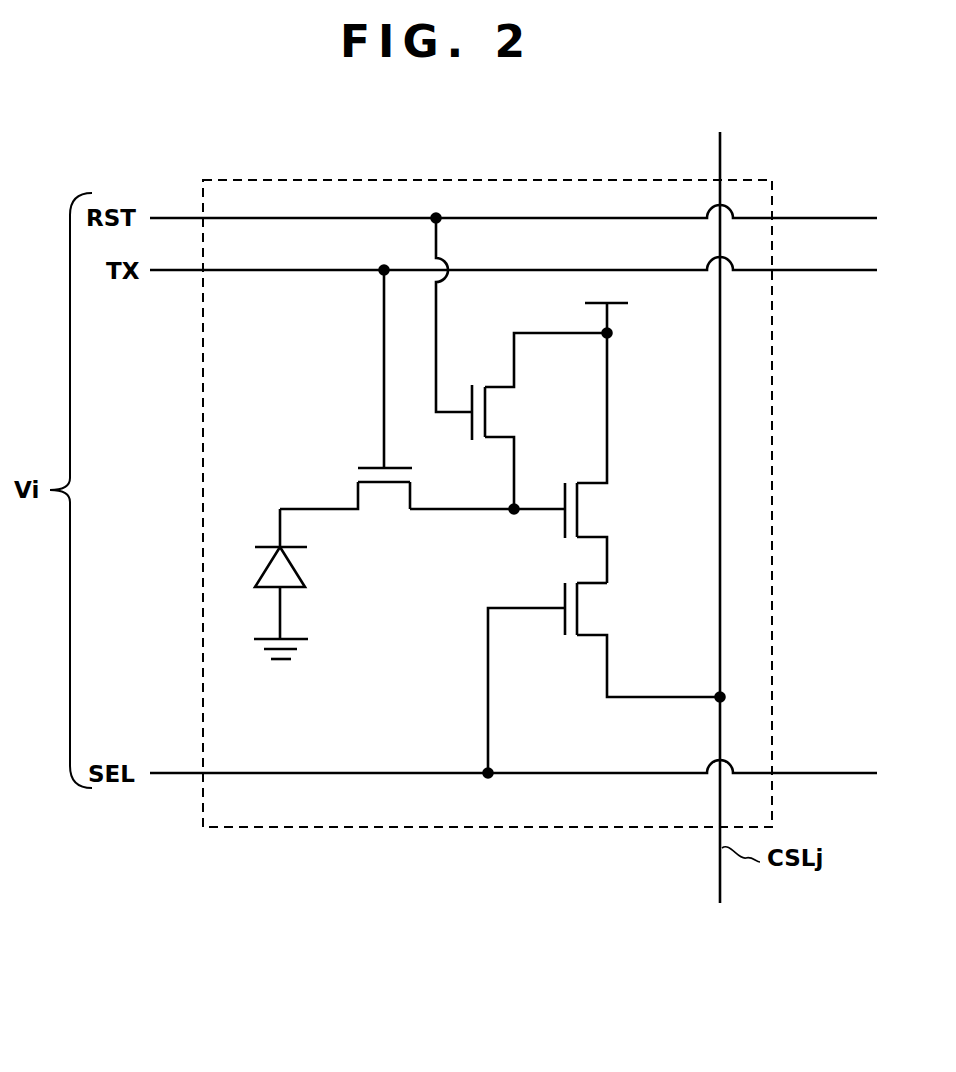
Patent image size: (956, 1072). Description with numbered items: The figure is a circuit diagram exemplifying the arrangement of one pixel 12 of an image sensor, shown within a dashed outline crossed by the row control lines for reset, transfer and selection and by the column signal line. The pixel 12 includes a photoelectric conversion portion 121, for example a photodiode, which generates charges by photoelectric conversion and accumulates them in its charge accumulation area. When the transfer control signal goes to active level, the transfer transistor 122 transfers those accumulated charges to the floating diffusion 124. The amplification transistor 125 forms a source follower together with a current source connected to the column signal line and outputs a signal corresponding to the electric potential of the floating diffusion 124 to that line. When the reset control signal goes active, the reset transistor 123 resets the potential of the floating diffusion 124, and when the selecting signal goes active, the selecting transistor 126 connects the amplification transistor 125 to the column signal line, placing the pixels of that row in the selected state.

The pixel 12 is at (773, 478).
The photoelectric conversion portion 121 is at (318, 580).
The transfer transistor 122 is at (346, 485).
The reset transistor 123 is at (503, 413).
The floating diffusion 124 is at (466, 511).
The amplification transistor 125 is at (603, 507).
The selecting transistor 126 is at (603, 608).